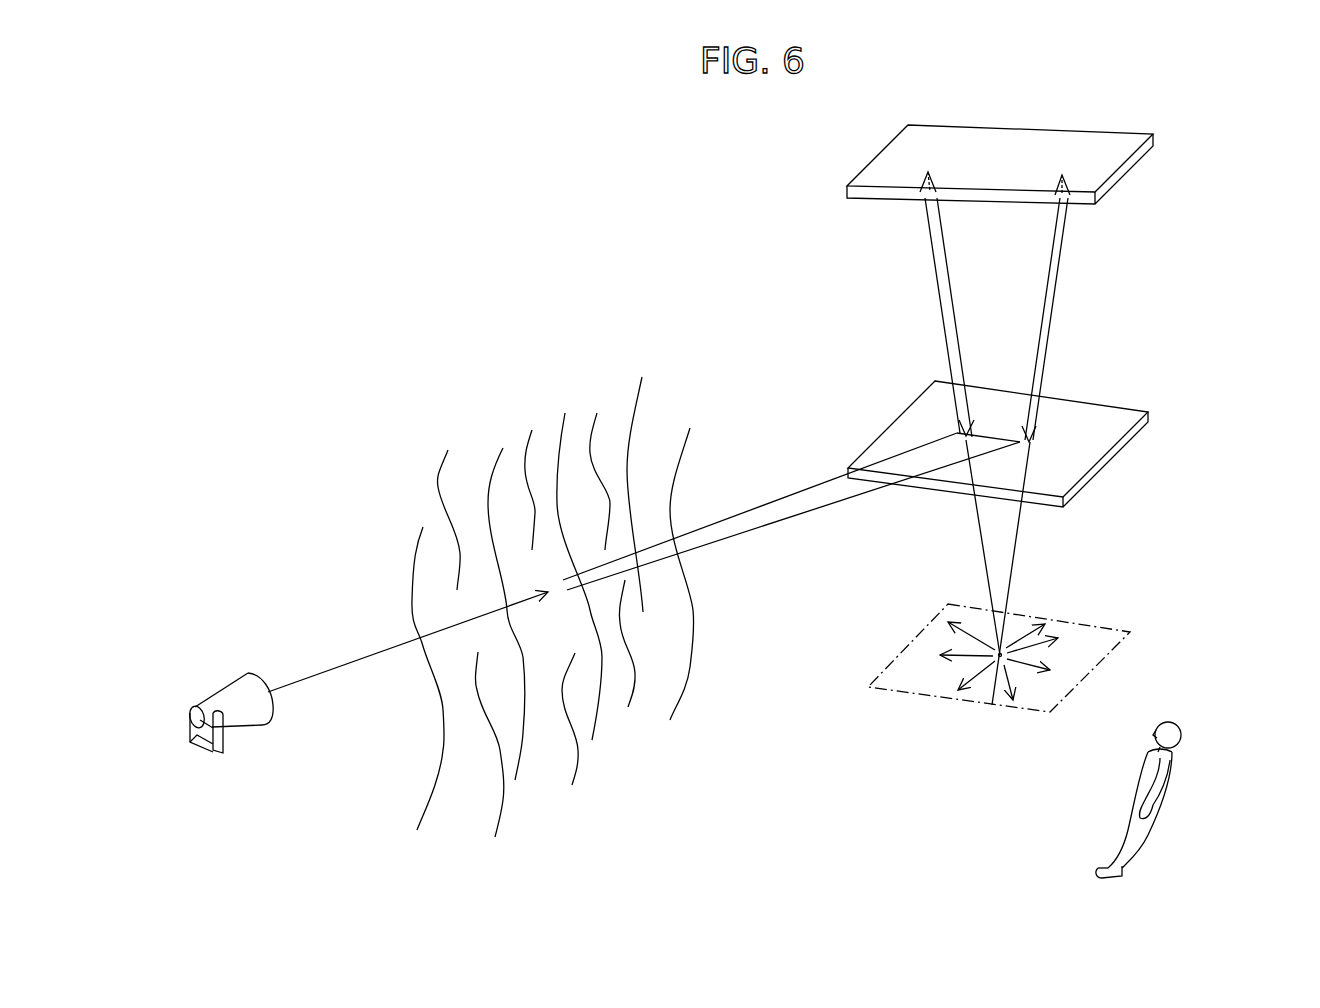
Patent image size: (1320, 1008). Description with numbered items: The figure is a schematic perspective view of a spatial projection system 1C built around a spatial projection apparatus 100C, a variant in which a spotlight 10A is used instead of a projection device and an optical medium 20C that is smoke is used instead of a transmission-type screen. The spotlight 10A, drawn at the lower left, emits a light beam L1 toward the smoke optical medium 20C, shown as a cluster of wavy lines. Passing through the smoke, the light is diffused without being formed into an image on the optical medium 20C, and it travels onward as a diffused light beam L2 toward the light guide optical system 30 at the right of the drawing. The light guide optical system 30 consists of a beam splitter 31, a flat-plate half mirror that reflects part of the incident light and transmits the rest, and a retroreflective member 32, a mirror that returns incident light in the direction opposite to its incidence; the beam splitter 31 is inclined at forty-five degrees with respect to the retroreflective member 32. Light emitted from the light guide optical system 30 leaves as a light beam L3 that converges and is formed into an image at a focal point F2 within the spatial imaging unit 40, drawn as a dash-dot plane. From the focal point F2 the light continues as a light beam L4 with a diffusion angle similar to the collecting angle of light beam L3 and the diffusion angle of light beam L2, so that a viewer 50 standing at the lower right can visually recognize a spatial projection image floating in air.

The spatial projection system 1C is at (585, 222).
The spatial projection apparatus 100C is at (545, 260).
The spotlight 10A is at (220, 690).
The optical medium 20C is at (470, 525).
The light beam L1 is at (377, 652).
The light beam L2 is at (790, 493).
The light guide optical system 30 is at (1053, 324).
The beam splitter 31 is at (1112, 460).
The retroreflective member 32 is at (1123, 175).
The light beam L3 is at (953, 300).
The light beam L4 is at (1025, 630).
The spatial imaging unit 40 is at (918, 693).
The focal point F2 is at (1000, 655).
The viewer 50 is at (1177, 823).